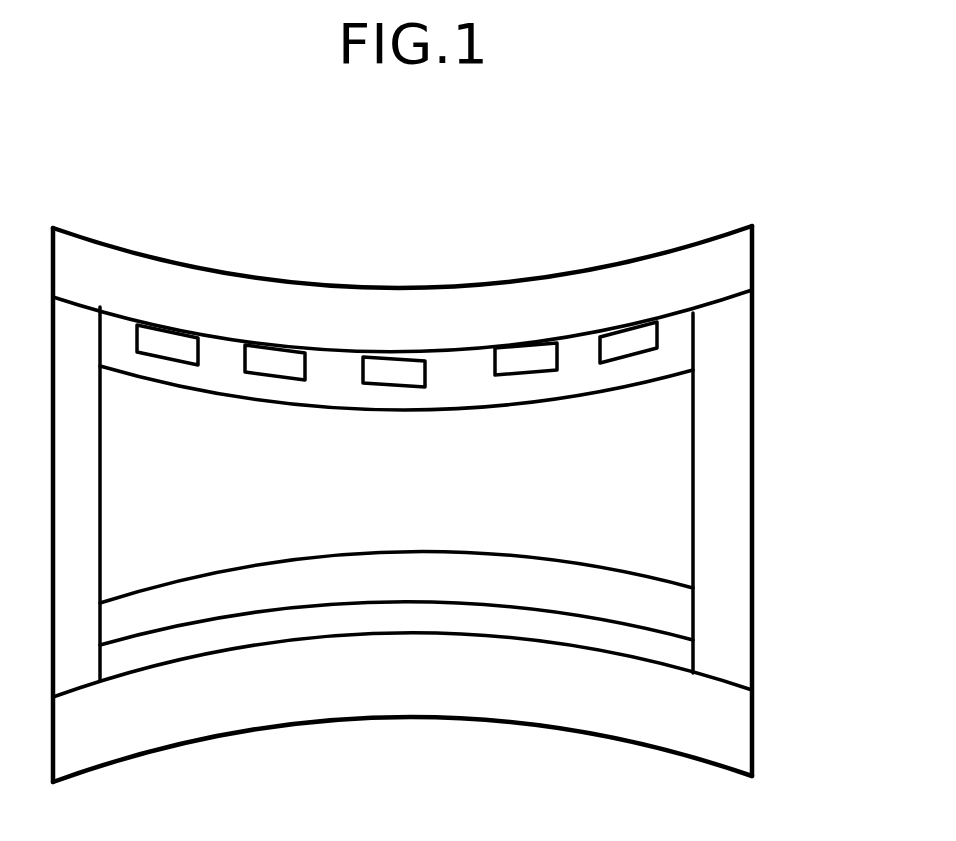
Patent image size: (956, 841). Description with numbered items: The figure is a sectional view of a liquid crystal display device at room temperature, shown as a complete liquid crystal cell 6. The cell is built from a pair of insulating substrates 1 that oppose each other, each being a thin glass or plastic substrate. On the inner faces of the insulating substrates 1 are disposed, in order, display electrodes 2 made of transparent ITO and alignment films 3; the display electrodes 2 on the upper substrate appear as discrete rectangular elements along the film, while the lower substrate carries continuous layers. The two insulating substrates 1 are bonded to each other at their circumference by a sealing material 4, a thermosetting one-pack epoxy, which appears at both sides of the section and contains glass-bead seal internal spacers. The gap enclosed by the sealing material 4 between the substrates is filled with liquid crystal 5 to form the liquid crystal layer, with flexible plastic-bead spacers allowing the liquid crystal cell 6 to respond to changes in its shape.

The insulating substrate 1 is at (737, 263).
The display electrode 2 is at (630, 337).
The alignment film 3 is at (463, 373).
The sealing material 4 is at (735, 428).
The liquid crystal 5 is at (673, 537).
The liquid crystal cell 6 is at (756, 214).